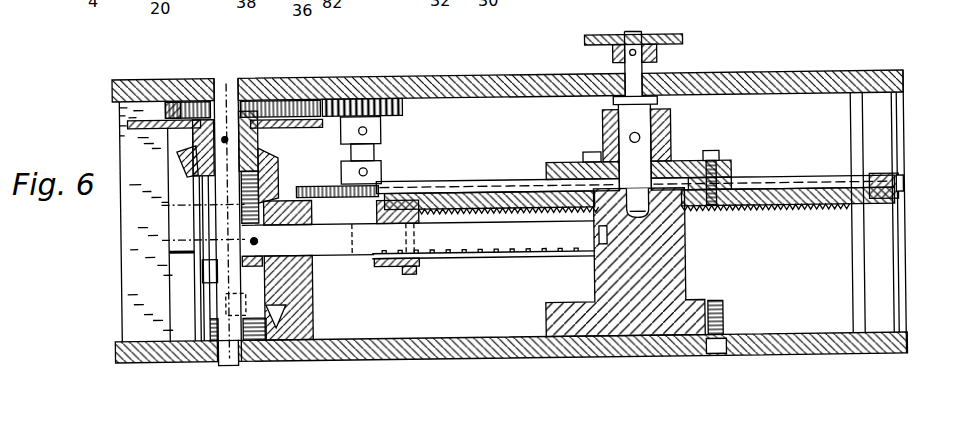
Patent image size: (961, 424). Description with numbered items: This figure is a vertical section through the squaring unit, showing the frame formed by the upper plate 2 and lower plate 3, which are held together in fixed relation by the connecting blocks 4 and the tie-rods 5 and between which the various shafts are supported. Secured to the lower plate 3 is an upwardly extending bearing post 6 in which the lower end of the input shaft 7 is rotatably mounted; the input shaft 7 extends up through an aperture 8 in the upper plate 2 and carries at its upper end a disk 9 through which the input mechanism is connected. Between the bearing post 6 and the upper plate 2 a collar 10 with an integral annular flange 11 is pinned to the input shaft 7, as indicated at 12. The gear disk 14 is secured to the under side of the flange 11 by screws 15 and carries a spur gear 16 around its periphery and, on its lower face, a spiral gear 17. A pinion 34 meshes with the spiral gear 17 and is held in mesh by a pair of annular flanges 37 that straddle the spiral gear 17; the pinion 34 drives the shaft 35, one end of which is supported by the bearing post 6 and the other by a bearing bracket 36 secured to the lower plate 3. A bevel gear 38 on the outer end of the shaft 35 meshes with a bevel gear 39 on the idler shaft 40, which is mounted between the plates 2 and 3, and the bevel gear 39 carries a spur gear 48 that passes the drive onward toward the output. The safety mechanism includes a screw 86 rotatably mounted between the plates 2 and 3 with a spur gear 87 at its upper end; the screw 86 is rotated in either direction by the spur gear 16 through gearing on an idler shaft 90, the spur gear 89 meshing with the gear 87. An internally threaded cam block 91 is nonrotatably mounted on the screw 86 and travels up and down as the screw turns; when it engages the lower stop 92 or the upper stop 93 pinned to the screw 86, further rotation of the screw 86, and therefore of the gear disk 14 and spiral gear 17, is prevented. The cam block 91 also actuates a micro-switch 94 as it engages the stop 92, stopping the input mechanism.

The upper plate 2 is at (826, 81).
The lower plate 3 is at (809, 343).
The connecting block 4 is at (128, 246).
The tie-rod 5 is at (885, 277).
The bearing post 6 is at (688, 271).
The input shaft 7 is at (623, 76).
The aperture 8 is at (378, 188).
The disk 9 is at (656, 41).
The collar 10 is at (602, 136).
The annular integral flange 11 is at (548, 171).
The pin 12 is at (640, 145).
The gear disk 14 is at (806, 196).
The screw 15 is at (718, 161).
The spur gear 16 is at (904, 195).
The spiral gear 17 is at (801, 221).
The pinion 34 is at (420, 270).
The shaft 35 is at (546, 262).
The bearing bracket 36 is at (312, 216).
The annular flange 37 is at (392, 270).
The bevel gear 38 is at (300, 277).
The bevel gear 39 is at (177, 161).
The idler shaft 40 is at (223, 79).
The spur gear 48 is at (128, 125).
The screw 86 is at (270, 340).
The spur gear 87 is at (181, 103).
The spur gear 89 is at (404, 123).
The idler shaft 90 is at (375, 332).
The cam block 91 is at (200, 270).
The stop 92 is at (248, 306).
The stop 93 is at (285, 162).
The micro-switch 94 is at (180, 212).